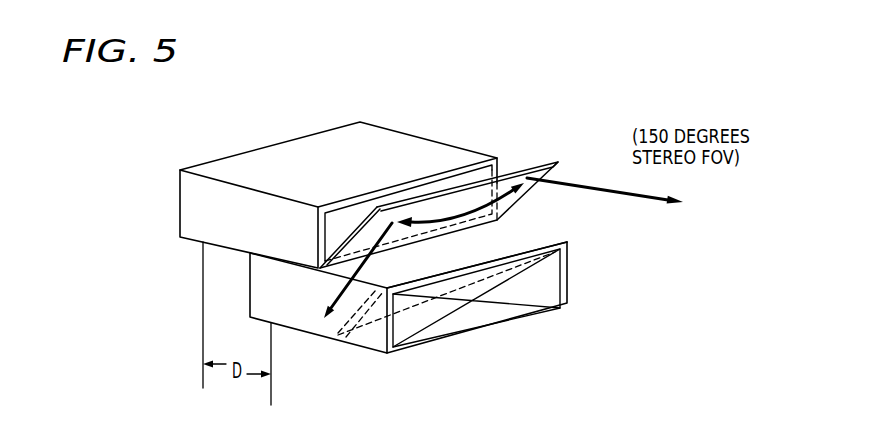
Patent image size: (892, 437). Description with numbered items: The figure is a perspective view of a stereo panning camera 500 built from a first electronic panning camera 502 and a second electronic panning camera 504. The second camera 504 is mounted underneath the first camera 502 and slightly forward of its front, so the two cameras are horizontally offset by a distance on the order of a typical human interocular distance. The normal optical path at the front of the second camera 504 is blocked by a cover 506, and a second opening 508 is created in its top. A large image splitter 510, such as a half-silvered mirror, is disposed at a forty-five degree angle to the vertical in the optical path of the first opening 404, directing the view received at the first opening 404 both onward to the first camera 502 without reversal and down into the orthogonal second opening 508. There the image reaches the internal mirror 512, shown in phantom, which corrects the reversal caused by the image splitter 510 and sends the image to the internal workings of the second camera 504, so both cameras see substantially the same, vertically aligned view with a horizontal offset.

The stereo panning camera 500 is at (459, 93).
The first electronic panning camera 502 is at (338, 126).
The first opening 404 is at (340, 222).
The second electronic panning camera 504 is at (258, 290).
The cover 506 is at (553, 285).
The second opening 508 is at (549, 241).
The image splitter 510 is at (531, 173).
The internal mirror 512 is at (333, 342).